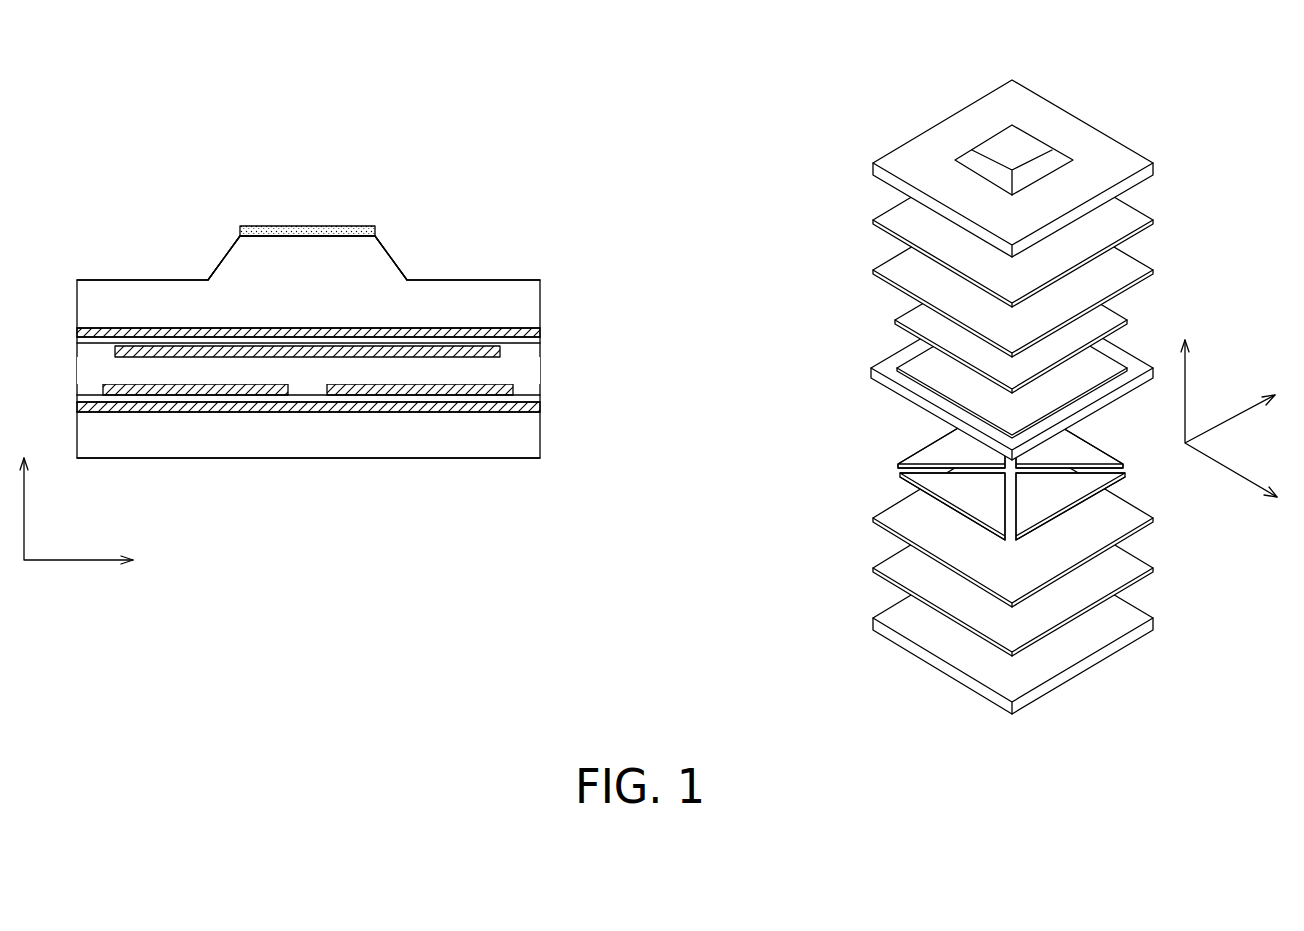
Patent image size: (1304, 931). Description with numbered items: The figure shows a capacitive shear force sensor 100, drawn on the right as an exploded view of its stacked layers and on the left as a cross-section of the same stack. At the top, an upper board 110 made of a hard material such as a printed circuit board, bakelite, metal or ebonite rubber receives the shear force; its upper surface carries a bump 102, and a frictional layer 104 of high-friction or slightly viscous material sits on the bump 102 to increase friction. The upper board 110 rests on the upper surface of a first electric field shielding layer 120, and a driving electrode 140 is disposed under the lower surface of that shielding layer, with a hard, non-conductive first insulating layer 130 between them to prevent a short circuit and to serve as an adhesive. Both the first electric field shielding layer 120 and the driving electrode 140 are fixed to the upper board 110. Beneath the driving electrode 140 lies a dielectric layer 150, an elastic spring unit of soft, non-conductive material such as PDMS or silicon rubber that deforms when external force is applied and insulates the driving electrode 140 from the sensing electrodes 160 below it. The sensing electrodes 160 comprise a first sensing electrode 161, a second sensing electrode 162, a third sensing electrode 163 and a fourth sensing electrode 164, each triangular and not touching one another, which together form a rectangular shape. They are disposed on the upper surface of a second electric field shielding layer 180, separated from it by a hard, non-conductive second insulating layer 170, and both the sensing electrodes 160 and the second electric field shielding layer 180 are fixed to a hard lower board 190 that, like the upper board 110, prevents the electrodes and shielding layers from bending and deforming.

The capacitive shear force sensor 100 is at (318, 492).
The bump 102 is at (388, 253).
The frictional layer 104 is at (298, 227).
The upper board 110 is at (873, 165).
The first electric field shielding layer 120 is at (863, 223).
The first insulating layer 130 is at (877, 270).
The driving electrode 140 is at (895, 320).
The dielectric layer 150 is at (868, 370).
The sensing electrodes 160 is at (611, 446).
The first sensing electrode 161 is at (137, 384).
The second sensing electrode 162 is at (358, 393).
The third sensing electrode 163 is at (1065, 490).
The fourth sensing electrode 164 is at (945, 453).
The second insulating layer 170 is at (870, 520).
The second electric field shielding layer 180 is at (870, 569).
The lower board 190 is at (870, 620).